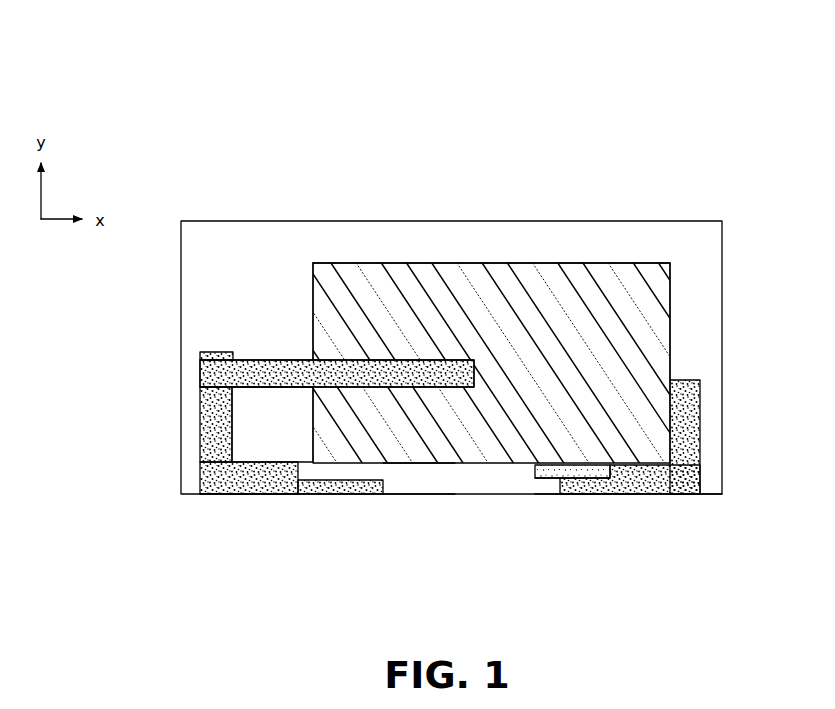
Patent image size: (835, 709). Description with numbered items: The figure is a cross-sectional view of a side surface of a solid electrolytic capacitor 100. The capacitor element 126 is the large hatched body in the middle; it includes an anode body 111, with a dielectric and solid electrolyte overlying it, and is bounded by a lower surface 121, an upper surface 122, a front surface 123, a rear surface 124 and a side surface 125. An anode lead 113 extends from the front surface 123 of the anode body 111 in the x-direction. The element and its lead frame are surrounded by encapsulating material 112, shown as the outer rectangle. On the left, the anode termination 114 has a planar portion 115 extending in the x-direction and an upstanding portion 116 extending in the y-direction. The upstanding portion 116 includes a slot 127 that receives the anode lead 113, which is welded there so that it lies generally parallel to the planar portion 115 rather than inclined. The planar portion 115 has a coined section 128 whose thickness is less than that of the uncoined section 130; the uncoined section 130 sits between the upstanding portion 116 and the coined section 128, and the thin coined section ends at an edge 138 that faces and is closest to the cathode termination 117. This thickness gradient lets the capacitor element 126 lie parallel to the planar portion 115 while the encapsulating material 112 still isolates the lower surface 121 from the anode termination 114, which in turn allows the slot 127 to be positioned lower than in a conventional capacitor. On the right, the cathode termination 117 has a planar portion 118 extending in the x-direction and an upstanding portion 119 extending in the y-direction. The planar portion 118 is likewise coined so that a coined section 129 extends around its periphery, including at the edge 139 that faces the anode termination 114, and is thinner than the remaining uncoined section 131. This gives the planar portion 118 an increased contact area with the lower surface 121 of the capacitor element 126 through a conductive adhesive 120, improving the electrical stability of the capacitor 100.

The solid electrolytic capacitor 100 is at (345, 150).
The anode body 111 is at (497, 285).
The encapsulating material 112 is at (657, 235).
The anode lead 113 is at (250, 358).
The anode termination 114 is at (200, 493).
The planar portion of the anode termination 115 is at (255, 497).
The upstanding portion of the anode termination 116 is at (200, 435).
The cathode termination 117 is at (718, 496).
The planar portion of the cathode termination 118 is at (638, 495).
The upstanding portion of the cathode termination 119 is at (700, 438).
The conductive adhesive 120 is at (610, 496).
The lower surface 121 is at (455, 494).
The upper surface 122 is at (565, 262).
The front surface 123 is at (313, 330).
The rear surface 124 is at (670, 335).
The side surface 125 is at (535, 386).
The capacitor element 126 is at (424, 292).
The slot 127 is at (217, 348).
The coined section 128 is at (402, 496).
The coined section 129 is at (540, 496).
The uncoined section 130 is at (262, 462).
The uncoined section 131 is at (557, 496).
The edge 138 is at (384, 487).
The edge 139 is at (533, 473).